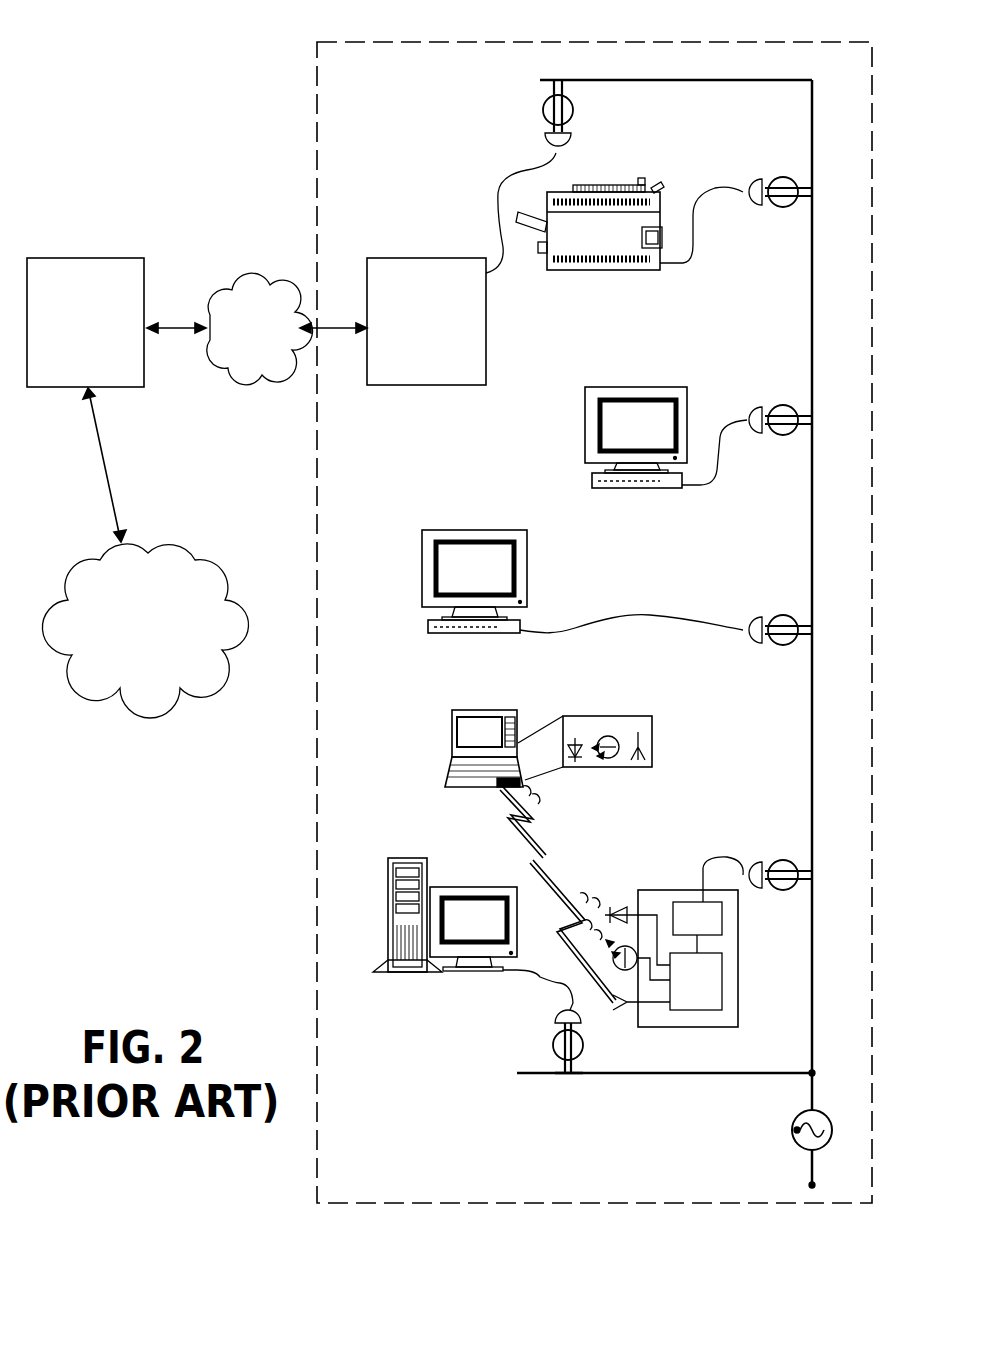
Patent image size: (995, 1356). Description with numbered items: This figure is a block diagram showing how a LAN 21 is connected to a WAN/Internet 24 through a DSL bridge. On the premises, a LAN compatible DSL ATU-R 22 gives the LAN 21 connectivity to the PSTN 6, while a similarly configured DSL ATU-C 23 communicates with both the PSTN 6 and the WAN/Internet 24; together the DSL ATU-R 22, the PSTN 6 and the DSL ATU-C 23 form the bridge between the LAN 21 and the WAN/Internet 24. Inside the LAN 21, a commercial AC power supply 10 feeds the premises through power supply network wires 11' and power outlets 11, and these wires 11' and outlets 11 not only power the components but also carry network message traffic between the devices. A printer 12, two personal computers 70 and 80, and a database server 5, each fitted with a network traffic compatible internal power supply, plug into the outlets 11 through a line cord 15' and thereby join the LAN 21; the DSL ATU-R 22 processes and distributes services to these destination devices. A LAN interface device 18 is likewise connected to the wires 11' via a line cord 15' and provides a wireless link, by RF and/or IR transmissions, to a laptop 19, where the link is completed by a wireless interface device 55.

The LAN 21 is at (407, 42).
The DSL ATU-C 23 is at (54, 258).
The PSTN 6 is at (268, 278).
The DSL ATU-R 22 is at (412, 258).
The WAN/Internet 24 is at (171, 542).
The power supply network wires 11' is at (689, 595).
The power outlets 11 is at (677, 576).
The line cord 15' is at (600, 592).
The printer 12 is at (610, 178).
The personal computer 70 is at (585, 418).
The personal computer 80 is at (422, 555).
The laptop 19 is at (450, 745).
The wireless interface device 55 is at (652, 733).
The LAN interface device 18 is at (667, 890).
The database server 5 is at (440, 887).
The AC power supply 10 is at (800, 1153).